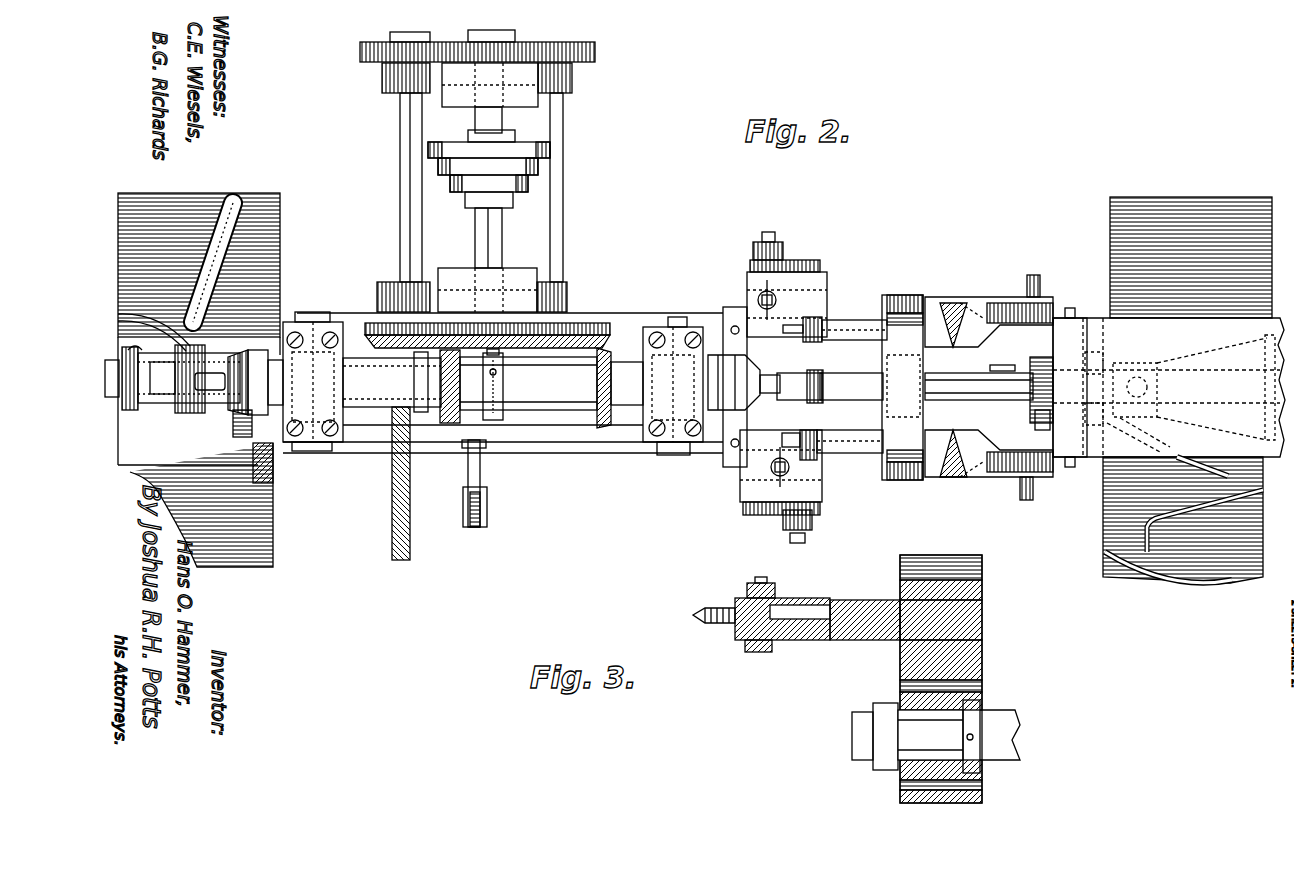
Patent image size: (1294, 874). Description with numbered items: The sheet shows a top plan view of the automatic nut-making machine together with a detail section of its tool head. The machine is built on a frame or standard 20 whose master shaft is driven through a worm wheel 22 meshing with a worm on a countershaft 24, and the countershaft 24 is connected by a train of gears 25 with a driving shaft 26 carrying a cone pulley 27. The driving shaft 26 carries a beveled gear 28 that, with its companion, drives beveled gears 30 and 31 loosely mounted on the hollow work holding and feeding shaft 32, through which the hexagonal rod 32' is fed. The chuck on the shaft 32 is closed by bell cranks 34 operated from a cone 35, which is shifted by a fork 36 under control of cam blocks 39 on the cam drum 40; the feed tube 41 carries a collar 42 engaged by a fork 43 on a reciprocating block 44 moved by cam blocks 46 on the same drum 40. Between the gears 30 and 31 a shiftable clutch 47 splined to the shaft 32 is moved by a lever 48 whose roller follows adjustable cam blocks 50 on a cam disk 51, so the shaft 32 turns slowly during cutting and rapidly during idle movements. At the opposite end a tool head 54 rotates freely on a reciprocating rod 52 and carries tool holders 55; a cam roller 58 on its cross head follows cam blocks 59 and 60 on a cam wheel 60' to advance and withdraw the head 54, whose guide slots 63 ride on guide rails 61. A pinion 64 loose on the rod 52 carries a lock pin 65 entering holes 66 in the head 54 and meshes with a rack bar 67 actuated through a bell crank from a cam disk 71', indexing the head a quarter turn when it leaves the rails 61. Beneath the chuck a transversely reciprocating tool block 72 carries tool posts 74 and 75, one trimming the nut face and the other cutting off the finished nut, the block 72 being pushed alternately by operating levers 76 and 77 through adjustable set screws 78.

In FIG. 2, the frame or standard 20 is at (1083, 297).
In FIG. 2, the worm wheel 22 is at (392, 530).
In FIG. 2, the countershaft 24 is at (400, 265).
In FIG. 2, the train of gears 25 is at (450, 50).
In FIG. 2, the driving shaft 26 is at (495, 118).
In FIG. 2, the cone pulley 27 is at (513, 200).
In FIG. 2, the beveled gear 28 is at (592, 330).
In FIG. 2, the beveled gear 30 is at (604, 420).
In FIG. 2, the beveled gear 31 is at (448, 418).
In FIG. 2, the hollow work holding and feeding shaft 32 is at (392, 382).
In FIG. 2, the hexagonal rod 32' is at (753, 377).
In FIG. 2, the operating bell cranks 34 is at (190, 414).
In FIG. 2, the cone 35 is at (238, 412).
In FIG. 2, the fork 36 is at (245, 438).
In FIG. 2, the cam blocks 39 is at (274, 462).
In FIG. 2, the cam drum 40 is at (252, 507).
In FIG. 2, the feed tube 41 is at (163, 396).
In FIG. 2, the operating head or collar 42 is at (130, 412).
In FIG. 2, the fork 43 is at (146, 344).
In FIG. 2, the reciprocating block 44 is at (189, 377).
In FIG. 2, the cam blocks 46 is at (170, 300).
In FIG. 2, the shiftable clutch 47 is at (528, 383).
In FIG. 2, the lever 48 is at (503, 418).
In FIG. 2, the adjustable cam blocks 50 is at (488, 513).
In FIG. 2, the cam disk 51 is at (480, 470).
In FIG. 2, the reciprocating rod 52 is at (905, 386).
In FIG. 3, the reciprocating rod 52 is at (936, 736).
In FIG. 2, the tool head 54 is at (903, 386).
In FIG. 3, the tool head 54 is at (984, 652).
In FIG. 2, the tool holders or posts 55 is at (862, 330).
In FIG. 3, the tool holders or posts 55 is at (858, 640).
In FIG. 2, the cam roller 58 is at (1140, 376).
In FIG. 2, the cam blocks 59 is at (1205, 468).
In FIG. 2, the cam blocks 60 is at (1169, 450).
In FIG. 2, the cam wheel 60' is at (1174, 257).
In FIG. 2, the guide rails 61 is at (945, 305).
In FIG. 2, the guide slots 63 is at (905, 298).
In FIG. 2, the gear or pinion 64 is at (1038, 416).
In FIG. 2, the lock pin 65 is at (1000, 367).
In FIG. 3, the holes 66 is at (982, 688).
In FIG. 2, the rack bar 67 is at (1045, 424).
In FIG. 2, the cam disk 71' is at (1033, 507).
In FIG. 2, the transversely reciprocating tool block 72 is at (815, 282).
In FIG. 2, the tool post 74 is at (758, 300).
In FIG. 2, the tool post 75 is at (773, 472).
In FIG. 2, the operating lever 76 is at (783, 251).
In FIG. 2, the operating lever 77 is at (812, 520).
In FIG. 2, the adjustable set screws 78 is at (770, 233).